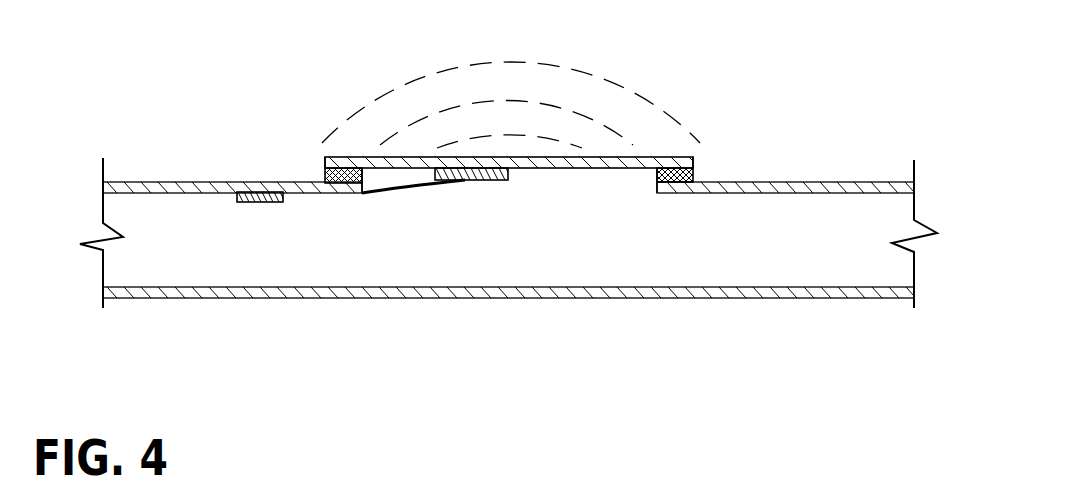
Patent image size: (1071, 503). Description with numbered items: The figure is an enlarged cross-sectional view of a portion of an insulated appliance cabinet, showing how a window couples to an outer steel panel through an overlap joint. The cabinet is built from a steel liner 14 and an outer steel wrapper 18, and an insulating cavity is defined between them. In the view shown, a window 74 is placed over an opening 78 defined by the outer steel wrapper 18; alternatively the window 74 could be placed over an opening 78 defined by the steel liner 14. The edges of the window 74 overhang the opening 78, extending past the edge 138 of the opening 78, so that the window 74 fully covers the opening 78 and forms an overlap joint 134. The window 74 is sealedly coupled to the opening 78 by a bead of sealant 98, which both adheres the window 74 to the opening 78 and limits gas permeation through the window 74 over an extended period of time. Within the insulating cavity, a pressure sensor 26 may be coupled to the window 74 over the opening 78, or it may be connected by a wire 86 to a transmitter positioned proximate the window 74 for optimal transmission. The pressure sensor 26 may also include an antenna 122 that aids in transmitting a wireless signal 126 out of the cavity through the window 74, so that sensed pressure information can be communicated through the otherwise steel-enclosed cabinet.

The steel liner 14 is at (403, 288).
The outer steel wrapper 18 is at (218, 183).
The pressure sensor 26 is at (237, 199).
The window 74 is at (612, 169).
The opening 78 is at (548, 234).
The wire 86 is at (343, 197).
The sealant 98 is at (322, 178).
The antenna 122 is at (508, 180).
The wireless signal 126 is at (575, 63).
The overlap joint 134 is at (320, 148).
The edge of the opening 138 is at (677, 185).